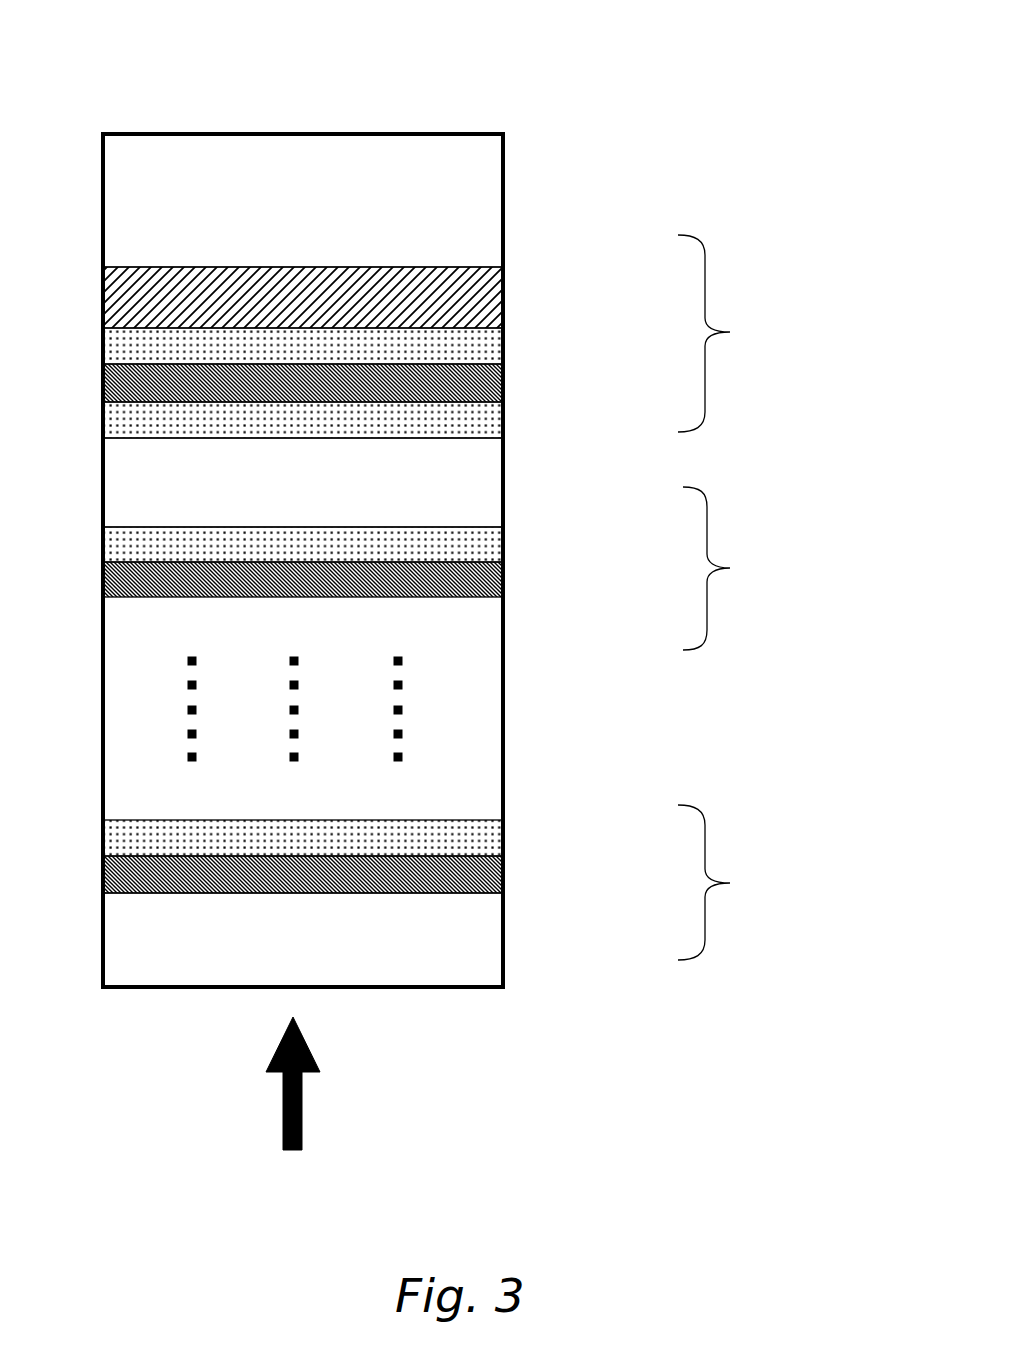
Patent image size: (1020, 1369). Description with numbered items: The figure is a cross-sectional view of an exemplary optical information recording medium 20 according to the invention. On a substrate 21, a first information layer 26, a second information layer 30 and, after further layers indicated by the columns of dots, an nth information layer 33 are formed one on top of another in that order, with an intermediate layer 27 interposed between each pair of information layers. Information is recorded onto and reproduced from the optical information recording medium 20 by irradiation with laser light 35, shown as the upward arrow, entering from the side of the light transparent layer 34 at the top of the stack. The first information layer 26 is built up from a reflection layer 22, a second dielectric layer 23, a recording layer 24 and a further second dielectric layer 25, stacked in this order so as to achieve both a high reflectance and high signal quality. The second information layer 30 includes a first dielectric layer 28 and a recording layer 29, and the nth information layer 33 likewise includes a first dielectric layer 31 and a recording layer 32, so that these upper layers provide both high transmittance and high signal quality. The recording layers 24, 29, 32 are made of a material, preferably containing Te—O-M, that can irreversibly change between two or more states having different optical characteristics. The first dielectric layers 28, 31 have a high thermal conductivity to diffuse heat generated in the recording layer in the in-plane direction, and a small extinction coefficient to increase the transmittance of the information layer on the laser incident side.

The optical information recording medium 20 is at (460, 105).
The substrate 21 is at (450, 208).
The reflection layer 22 is at (453, 292).
The second dielectric layer 23 is at (460, 343).
The recording layer 24 is at (465, 387).
The second dielectric layer 25 is at (447, 427).
The first information layer 26 is at (734, 333).
The intermediate layer 27 is at (463, 476).
The first dielectric layer 28 is at (463, 535).
The recording layer 29 is at (453, 597).
The second information layer 30 is at (737, 568).
The first dielectric layer 31 is at (468, 840).
The recording layer 32 is at (465, 877).
The nth information layer 33 is at (734, 882).
The light transparent layer 34 is at (472, 948).
The laser light 35 is at (334, 1083).